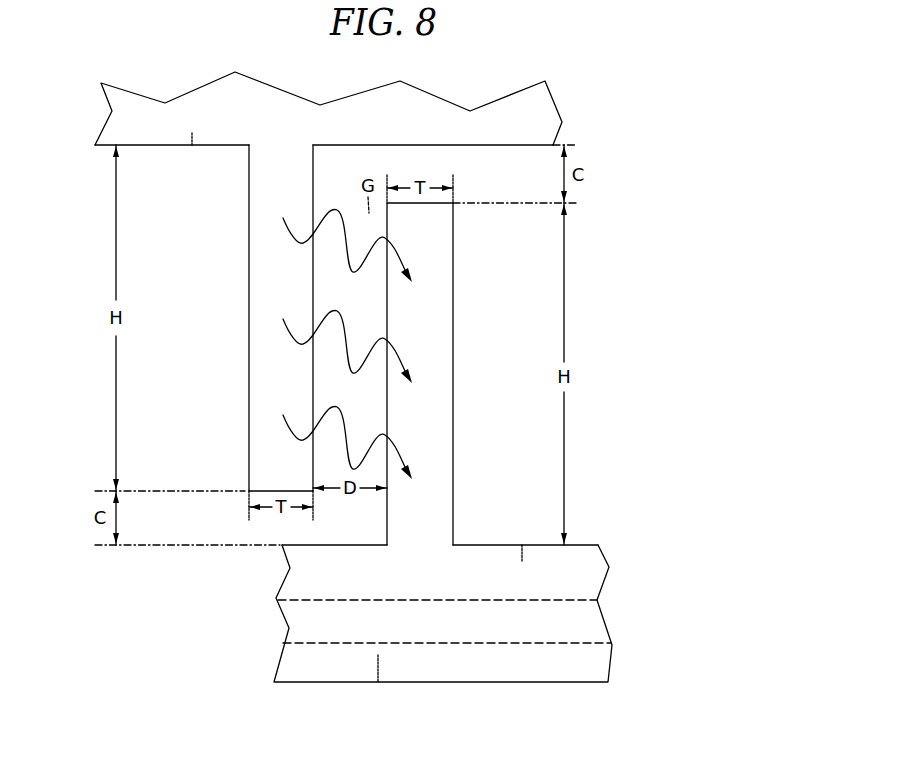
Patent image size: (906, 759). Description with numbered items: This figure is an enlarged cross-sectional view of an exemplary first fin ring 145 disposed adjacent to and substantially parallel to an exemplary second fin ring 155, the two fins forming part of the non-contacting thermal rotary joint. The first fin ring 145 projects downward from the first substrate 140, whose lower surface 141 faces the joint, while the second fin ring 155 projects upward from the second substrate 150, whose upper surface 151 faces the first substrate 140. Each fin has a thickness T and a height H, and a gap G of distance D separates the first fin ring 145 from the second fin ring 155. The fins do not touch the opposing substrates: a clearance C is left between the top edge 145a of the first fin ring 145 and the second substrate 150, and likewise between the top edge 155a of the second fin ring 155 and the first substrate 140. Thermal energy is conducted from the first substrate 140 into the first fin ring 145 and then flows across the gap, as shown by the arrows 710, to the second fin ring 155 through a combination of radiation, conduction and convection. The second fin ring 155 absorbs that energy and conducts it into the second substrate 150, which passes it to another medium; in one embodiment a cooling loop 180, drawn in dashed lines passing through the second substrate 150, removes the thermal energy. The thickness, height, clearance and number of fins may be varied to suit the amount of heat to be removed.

The first substrate 140 is at (362, 110).
The base surface of first member 141 is at (483, 148).
The first fin ring 145 is at (230, 332).
The top edge of first fin ring 145a is at (249, 493).
The second substrate 150 is at (465, 610).
The base surface of second member 151 is at (335, 542).
The second fin ring 155 is at (474, 363).
The top edge of second fin ring 155a is at (452, 200).
The cooling loop 180 is at (575, 618).
The arrows 710 is at (350, 430).